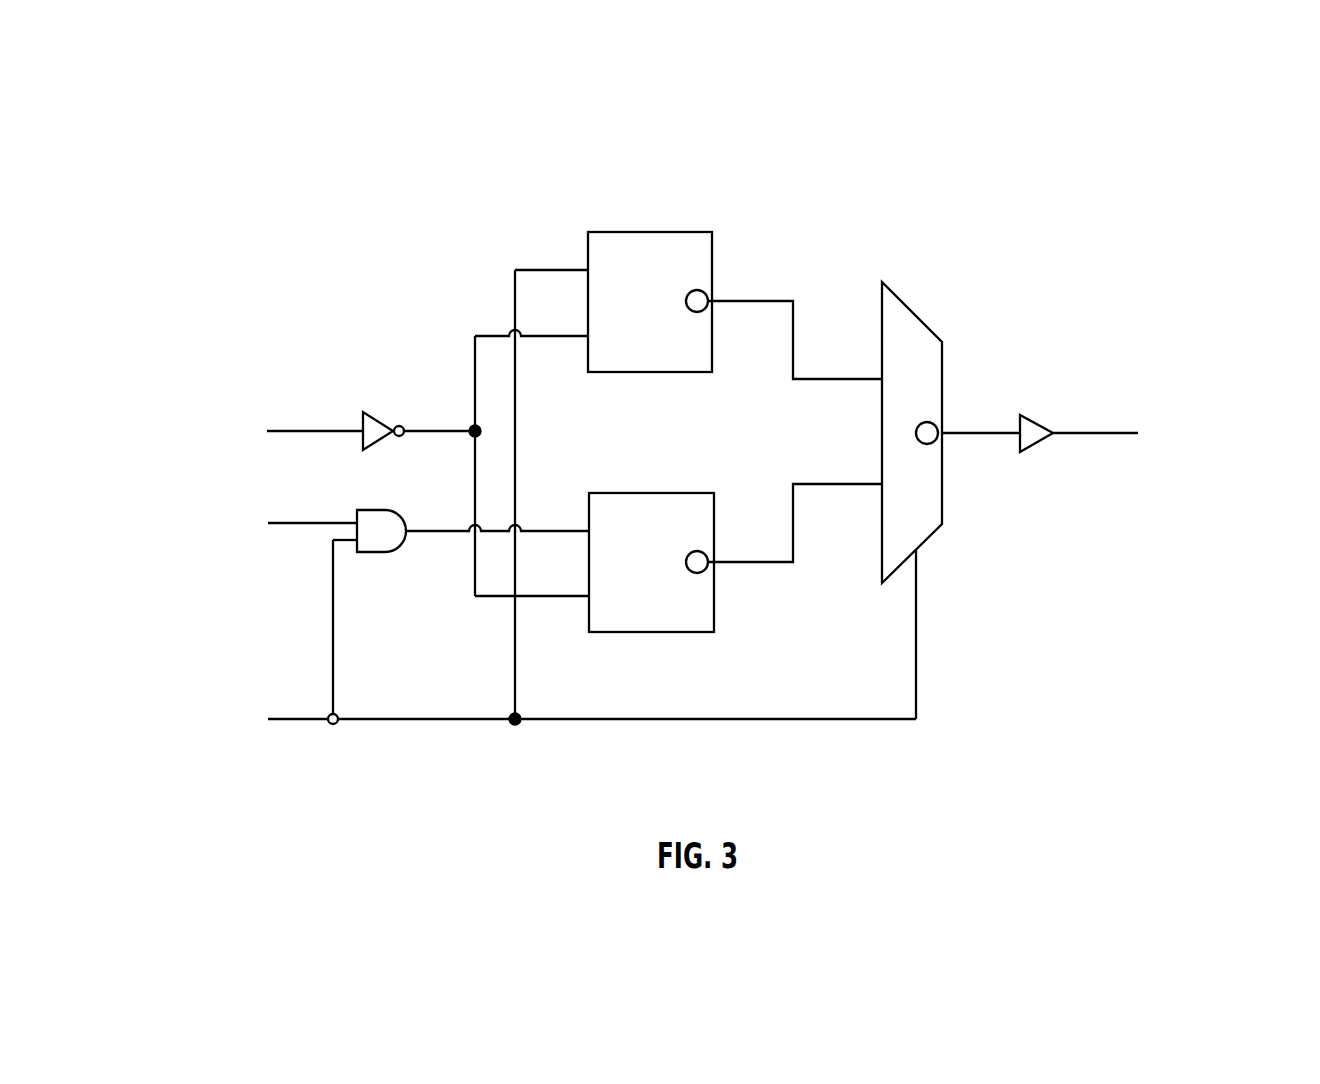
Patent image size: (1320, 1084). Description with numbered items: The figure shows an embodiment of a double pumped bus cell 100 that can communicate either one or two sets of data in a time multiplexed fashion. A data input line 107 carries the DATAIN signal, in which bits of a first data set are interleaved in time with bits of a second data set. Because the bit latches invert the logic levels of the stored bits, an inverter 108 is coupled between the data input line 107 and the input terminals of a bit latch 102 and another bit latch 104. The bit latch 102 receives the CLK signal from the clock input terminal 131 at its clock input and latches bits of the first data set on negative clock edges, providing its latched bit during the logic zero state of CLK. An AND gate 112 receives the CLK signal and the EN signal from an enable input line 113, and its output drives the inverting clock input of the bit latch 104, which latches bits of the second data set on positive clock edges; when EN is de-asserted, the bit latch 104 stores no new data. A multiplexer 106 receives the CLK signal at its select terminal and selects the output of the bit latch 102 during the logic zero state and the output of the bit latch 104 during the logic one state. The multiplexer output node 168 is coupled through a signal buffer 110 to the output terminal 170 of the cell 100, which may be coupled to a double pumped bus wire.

The double pumped bus cell 100 is at (878, 215).
The bit latch 102 is at (633, 232).
The bit latch 104 is at (643, 632).
The multiplexer 106 is at (923, 322).
The data input line 107 is at (308, 431).
The inverter 108 is at (385, 413).
The signal buffer 110 is at (1030, 413).
The AND gate 112 is at (367, 550).
The enable input line 113 is at (288, 523).
The clock input terminal 131 is at (283, 720).
The node 168 is at (990, 435).
The output terminal 170 is at (1102, 435).